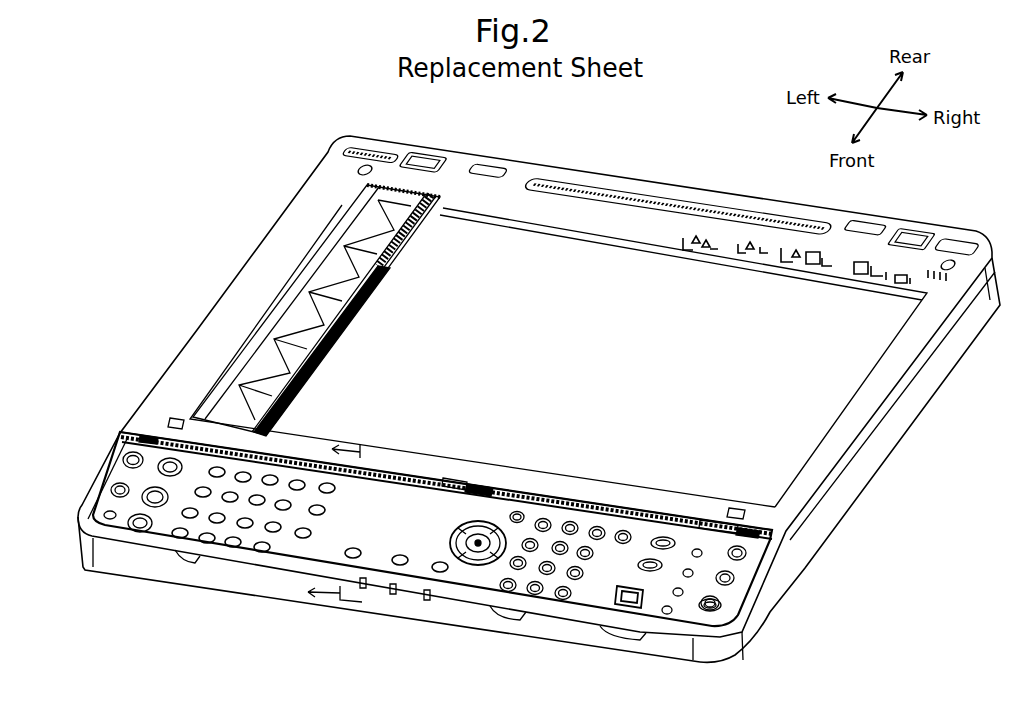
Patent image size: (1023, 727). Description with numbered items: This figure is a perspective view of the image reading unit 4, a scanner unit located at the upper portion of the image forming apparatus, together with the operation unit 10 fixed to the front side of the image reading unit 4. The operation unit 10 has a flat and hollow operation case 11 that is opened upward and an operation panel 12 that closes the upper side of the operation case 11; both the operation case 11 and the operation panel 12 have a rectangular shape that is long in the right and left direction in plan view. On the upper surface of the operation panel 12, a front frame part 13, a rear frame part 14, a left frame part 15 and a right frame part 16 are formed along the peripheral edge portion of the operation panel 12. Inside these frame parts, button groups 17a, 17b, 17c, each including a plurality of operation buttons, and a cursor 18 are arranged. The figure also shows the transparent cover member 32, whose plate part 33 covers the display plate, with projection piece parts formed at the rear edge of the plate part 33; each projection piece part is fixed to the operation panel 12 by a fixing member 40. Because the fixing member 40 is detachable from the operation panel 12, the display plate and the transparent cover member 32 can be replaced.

The image reading unit 4 is at (302, 179).
The operation unit 10 is at (511, 416).
The operation case 11 is at (410, 607).
The operation panel 12 is at (397, 549).
The front frame part 13 is at (400, 594).
The rear frame part 14 is at (533, 498).
The left frame part 15 is at (103, 492).
The right frame part 16 is at (752, 582).
The button group 17a is at (523, 612).
The button group 17b is at (640, 622).
The button group 17c is at (190, 565).
The cursor 18 is at (461, 583).
The plate part 33 is at (319, 338).
The transparent cover member 32 is at (316, 310).
The fixing member 40 is at (153, 429).